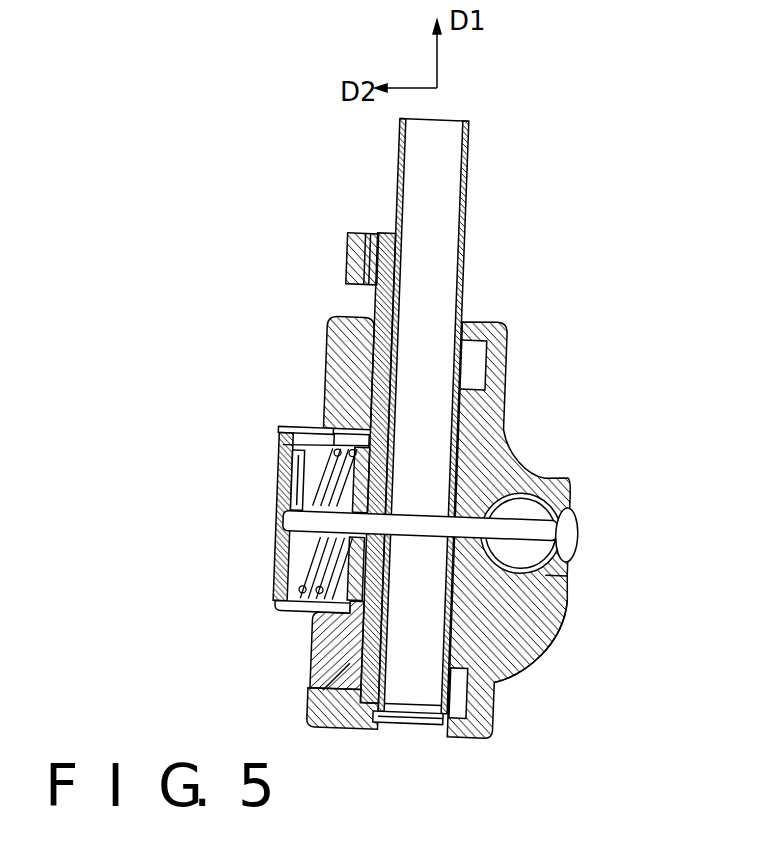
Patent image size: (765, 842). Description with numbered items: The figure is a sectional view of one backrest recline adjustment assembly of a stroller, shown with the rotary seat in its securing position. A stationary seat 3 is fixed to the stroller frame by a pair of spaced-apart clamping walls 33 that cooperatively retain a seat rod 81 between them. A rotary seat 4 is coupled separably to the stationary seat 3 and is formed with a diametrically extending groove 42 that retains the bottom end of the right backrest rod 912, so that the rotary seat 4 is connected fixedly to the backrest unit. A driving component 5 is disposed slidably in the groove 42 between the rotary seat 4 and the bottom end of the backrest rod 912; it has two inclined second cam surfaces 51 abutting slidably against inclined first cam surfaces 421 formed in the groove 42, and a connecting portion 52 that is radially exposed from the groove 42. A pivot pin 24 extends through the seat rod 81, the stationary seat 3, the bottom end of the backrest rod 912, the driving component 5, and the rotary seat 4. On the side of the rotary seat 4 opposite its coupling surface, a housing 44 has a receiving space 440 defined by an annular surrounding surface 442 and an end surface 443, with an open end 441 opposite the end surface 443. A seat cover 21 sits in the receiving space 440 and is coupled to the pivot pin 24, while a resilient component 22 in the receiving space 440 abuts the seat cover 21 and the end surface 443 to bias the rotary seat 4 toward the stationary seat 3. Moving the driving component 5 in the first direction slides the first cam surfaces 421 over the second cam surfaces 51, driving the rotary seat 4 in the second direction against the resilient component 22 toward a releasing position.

The stationary seat 3 is at (567, 544).
The rotary seat 4 is at (294, 525).
The driving component 5 is at (388, 233).
The seat cover 21 is at (280, 487).
The resilient component 22 is at (295, 478).
The pivot pin 24 is at (278, 523).
The clamping walls 33 is at (570, 500).
The groove 42 is at (296, 498).
The housing 44 is at (252, 515).
The second cam surfaces 51 is at (335, 445).
The connecting portion 52 is at (348, 258).
The seat rod 81 is at (548, 488).
The first cam surfaces 421 is at (340, 345).
The receiving space 440 is at (313, 455).
The open end 441 is at (310, 445).
The annular surrounding surface 442 is at (285, 580).
The end surface 443 is at (317, 617).
The right backrest rod 912 is at (440, 205).